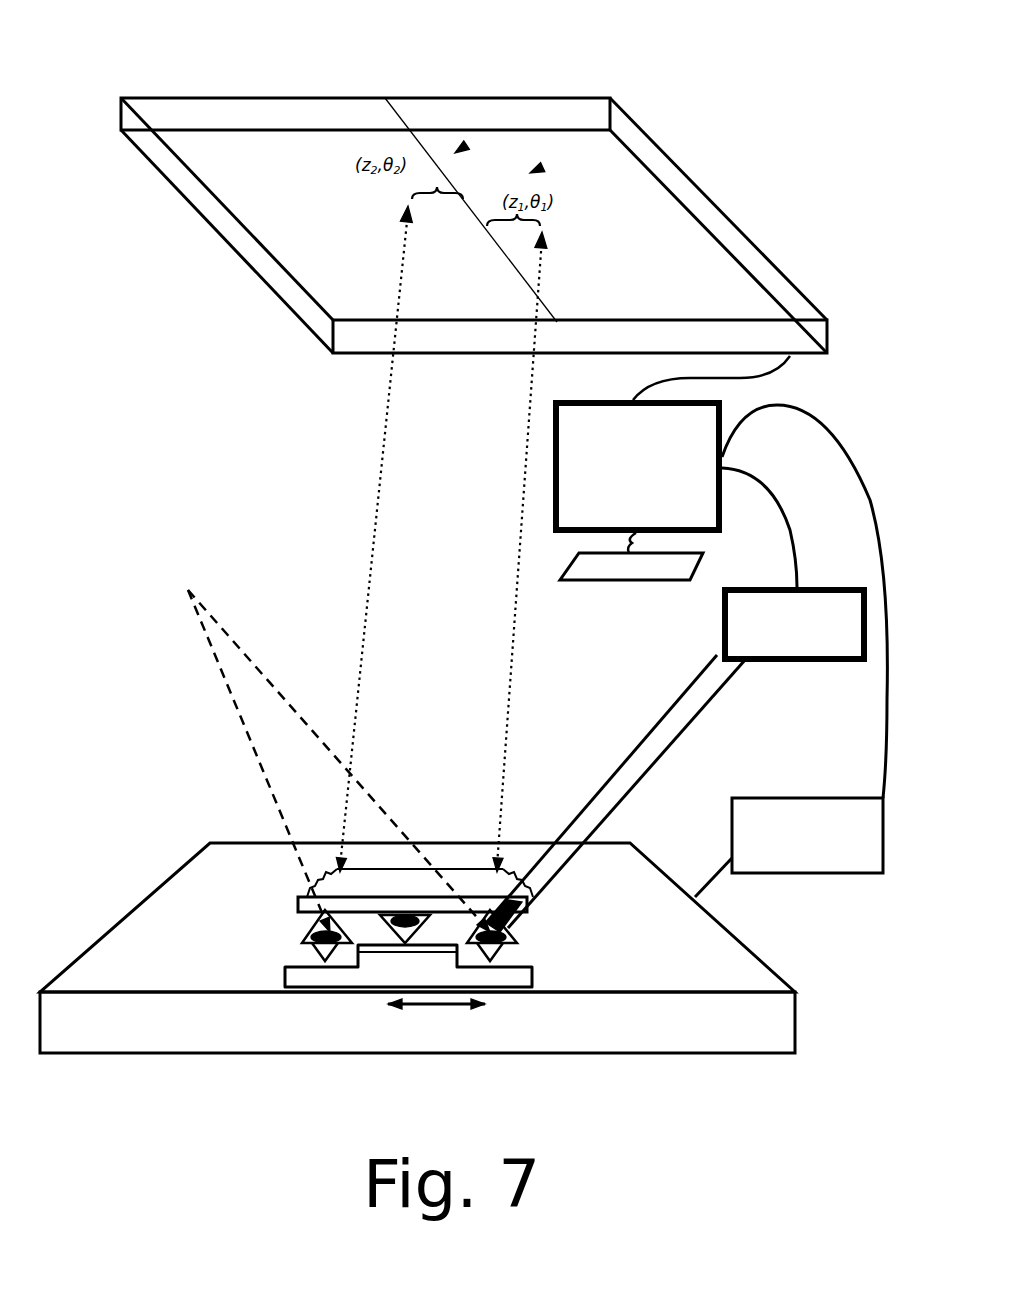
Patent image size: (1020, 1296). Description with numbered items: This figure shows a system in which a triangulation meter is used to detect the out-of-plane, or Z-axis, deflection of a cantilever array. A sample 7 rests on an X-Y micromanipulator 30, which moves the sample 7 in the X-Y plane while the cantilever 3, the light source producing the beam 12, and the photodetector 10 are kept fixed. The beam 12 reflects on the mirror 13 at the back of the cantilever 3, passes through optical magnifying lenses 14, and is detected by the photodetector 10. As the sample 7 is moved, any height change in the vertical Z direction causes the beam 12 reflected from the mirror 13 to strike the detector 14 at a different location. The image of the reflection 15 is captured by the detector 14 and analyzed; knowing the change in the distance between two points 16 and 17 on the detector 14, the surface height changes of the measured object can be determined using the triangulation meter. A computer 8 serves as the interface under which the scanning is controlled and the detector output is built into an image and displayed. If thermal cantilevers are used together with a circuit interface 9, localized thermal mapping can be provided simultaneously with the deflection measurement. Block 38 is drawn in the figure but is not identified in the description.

The cantilever 3 is at (322, 927).
The sample 7 is at (398, 958).
The computer 8 is at (656, 583).
The circuit interface 9 is at (845, 667).
The photodetector 10 is at (193, 208).
The beam 12 is at (188, 590).
The mirror 13 is at (513, 943).
The optical magnifying lenses 14 is at (358, 870).
The reflection 15 is at (517, 503).
The first point on the detector 16 is at (537, 169).
The second point on the detector 17 is at (462, 148).
The X-Y micromanipulator 30 is at (158, 1025).
The power supply 38 is at (838, 875).